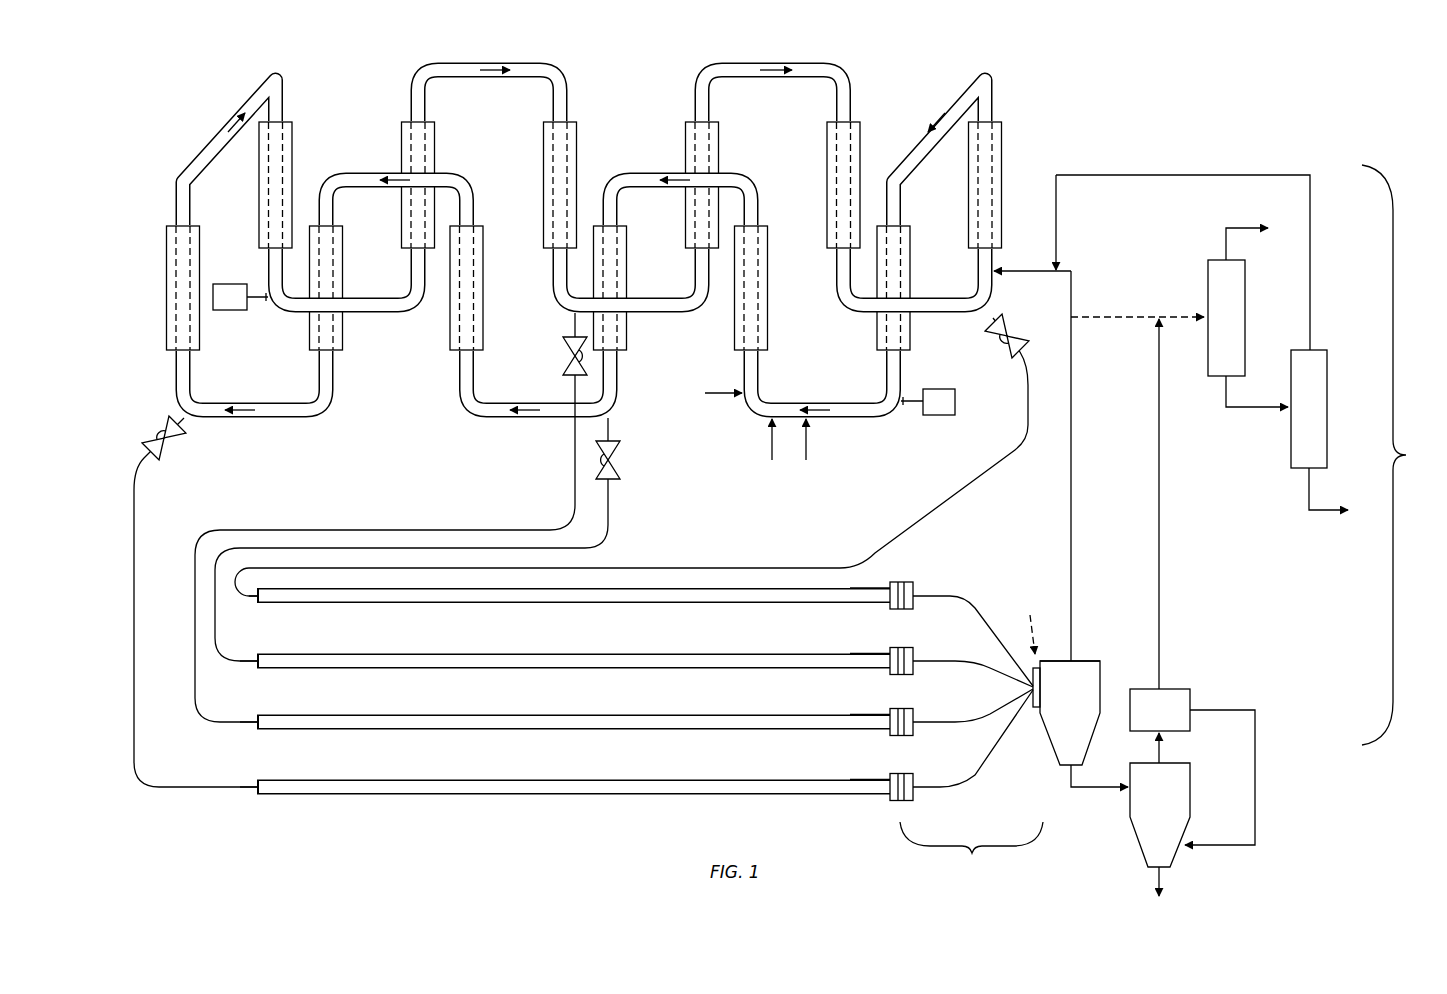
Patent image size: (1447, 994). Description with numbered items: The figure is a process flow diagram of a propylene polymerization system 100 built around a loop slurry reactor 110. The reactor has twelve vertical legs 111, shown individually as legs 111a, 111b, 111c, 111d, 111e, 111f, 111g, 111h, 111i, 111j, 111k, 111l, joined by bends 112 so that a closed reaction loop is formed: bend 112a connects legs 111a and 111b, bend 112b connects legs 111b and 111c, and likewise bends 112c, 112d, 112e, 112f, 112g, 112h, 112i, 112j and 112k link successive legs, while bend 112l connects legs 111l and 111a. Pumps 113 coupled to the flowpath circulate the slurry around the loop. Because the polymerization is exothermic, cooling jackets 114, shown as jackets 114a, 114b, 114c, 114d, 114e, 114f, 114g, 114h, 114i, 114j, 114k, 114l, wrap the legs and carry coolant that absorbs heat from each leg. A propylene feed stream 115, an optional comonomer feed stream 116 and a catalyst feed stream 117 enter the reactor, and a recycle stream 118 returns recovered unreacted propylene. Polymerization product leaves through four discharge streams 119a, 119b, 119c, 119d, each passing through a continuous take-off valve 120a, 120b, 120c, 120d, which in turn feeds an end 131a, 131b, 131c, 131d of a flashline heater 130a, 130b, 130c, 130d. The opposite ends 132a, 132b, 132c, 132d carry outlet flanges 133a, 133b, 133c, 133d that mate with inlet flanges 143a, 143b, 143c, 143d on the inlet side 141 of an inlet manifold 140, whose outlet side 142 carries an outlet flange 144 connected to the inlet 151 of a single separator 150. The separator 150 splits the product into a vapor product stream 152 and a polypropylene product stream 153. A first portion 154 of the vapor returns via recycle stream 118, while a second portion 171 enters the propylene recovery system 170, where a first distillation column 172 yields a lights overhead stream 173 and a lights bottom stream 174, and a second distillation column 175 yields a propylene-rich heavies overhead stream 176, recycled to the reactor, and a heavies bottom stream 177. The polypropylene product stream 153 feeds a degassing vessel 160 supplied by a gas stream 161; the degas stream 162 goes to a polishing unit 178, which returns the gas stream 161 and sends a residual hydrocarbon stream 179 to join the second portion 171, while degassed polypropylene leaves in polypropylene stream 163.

The propylene polymerization system 100 is at (1176, 122).
The loop slurry reactor 110 is at (428, 53).
The vertical legs 111 is at (154, 293).
The vertical leg 111a is at (168, 265).
The vertical leg 111b is at (290, 148).
The vertical leg 111c is at (431, 142).
The vertical leg 111d is at (578, 142).
The vertical leg 111e is at (714, 142).
The vertical leg 111f is at (835, 160).
The vertical leg 111g is at (1002, 150).
The vertical leg 111h is at (911, 334).
The vertical leg 111i is at (769, 332).
The vertical leg 111j is at (628, 332).
The vertical leg 111k is at (484, 330).
The vertical leg 111l is at (343, 332).
The bends 112 is at (222, 86).
The bend 112a is at (215, 126).
The bend 112b is at (303, 315).
The bend 112c is at (505, 66).
The bend 112d is at (662, 300).
The bend 112e is at (770, 66).
The bend 112f is at (855, 298).
The bend 112g is at (962, 90).
The bend 112h is at (850, 400).
The bend 112i is at (726, 172).
The bend 112j is at (500, 418).
The bend 112k is at (442, 172).
The bend 112l is at (290, 418).
The pump 113 is at (233, 312).
The cooling jackets 114 is at (153, 350).
The cooling jacket 114a is at (168, 320).
The cooling jacket 114b is at (297, 125).
The cooling jacket 114c is at (437, 124).
The cooling jacket 114d is at (578, 158).
The cooling jacket 114e is at (720, 124).
The cooling jacket 114f is at (862, 124).
The cooling jacket 114g is at (1004, 124).
The cooling jacket 114h is at (911, 355).
The cooling jacket 114i is at (770, 352).
The cooling jacket 114j is at (628, 352).
The cooling jacket 114k is at (452, 355).
The cooling jacket 114l is at (345, 350).
The propylene feed stream 115 is at (705, 393).
The comonomer feed stream 116 is at (772, 435).
The catalyst feed stream 117 is at (806, 445).
The recycle stream 118 is at (1042, 268).
The discharge stream 119a is at (136, 498).
The discharge stream 119b is at (572, 462).
The discharge stream 119c is at (610, 505).
The discharge stream 119d is at (1035, 432).
The continuous take-off valve 120a is at (178, 436).
The continuous take-off valve 120b is at (565, 356).
The continuous take-off valve 120c is at (620, 460).
The continuous take-off valve 120d is at (1018, 335).
The flashline heater 130a is at (560, 795).
The flashline heater 130b is at (560, 730).
The flashline heater 130c is at (560, 669).
The flashline heater 130d is at (560, 604).
The end 131a is at (280, 795).
The end 131b is at (280, 730).
The end 131c is at (280, 669).
The end 131d is at (280, 604).
The opposite end 132a is at (862, 783).
The opposite end 132b is at (862, 718).
The opposite end 132c is at (862, 657).
The opposite end 132d is at (862, 592).
The outlet flange 133a is at (882, 799).
The outlet flange 133b is at (882, 734).
The outlet flange 133c is at (882, 673).
The outlet flange 133d is at (882, 607).
The inlet manifold 140 is at (971, 848).
The inlet side 141 is at (925, 573).
The outlet side 142 is at (1036, 623).
The inlet flange 143a is at (918, 798).
The inlet flange 143b is at (918, 733).
The inlet flange 143c is at (918, 672).
The inlet flange 143d is at (918, 606).
The outlet flange 144 is at (1042, 710).
The separator 150 is at (1070, 713).
The inlet 151 is at (1070, 670).
The vapor product stream 152 is at (1072, 575).
The polypropylene product stream 153 is at (1092, 790).
The first portion 154 is at (1074, 290).
The degassing vessel 160 is at (1160, 815).
The gas stream 161 is at (1257, 800).
The degas stream 162 is at (1165, 748).
The polypropylene stream 163 is at (1165, 880).
The propylene recovery system 170 is at (1403, 455).
The second portion 171 is at (1125, 320).
The first distillation column 172 is at (1206, 290).
The lights overhead stream 173 is at (1228, 225).
The lights bottom stream 174 is at (1232, 405).
The second distillation column 175 is at (1290, 448).
The heavies overhead stream 176 is at (1312, 270).
The heavies bottom stream 177 is at (1312, 512).
The polishing unit 178 is at (1160, 710).
The residual hydrocarbon stream 179 is at (1162, 632).